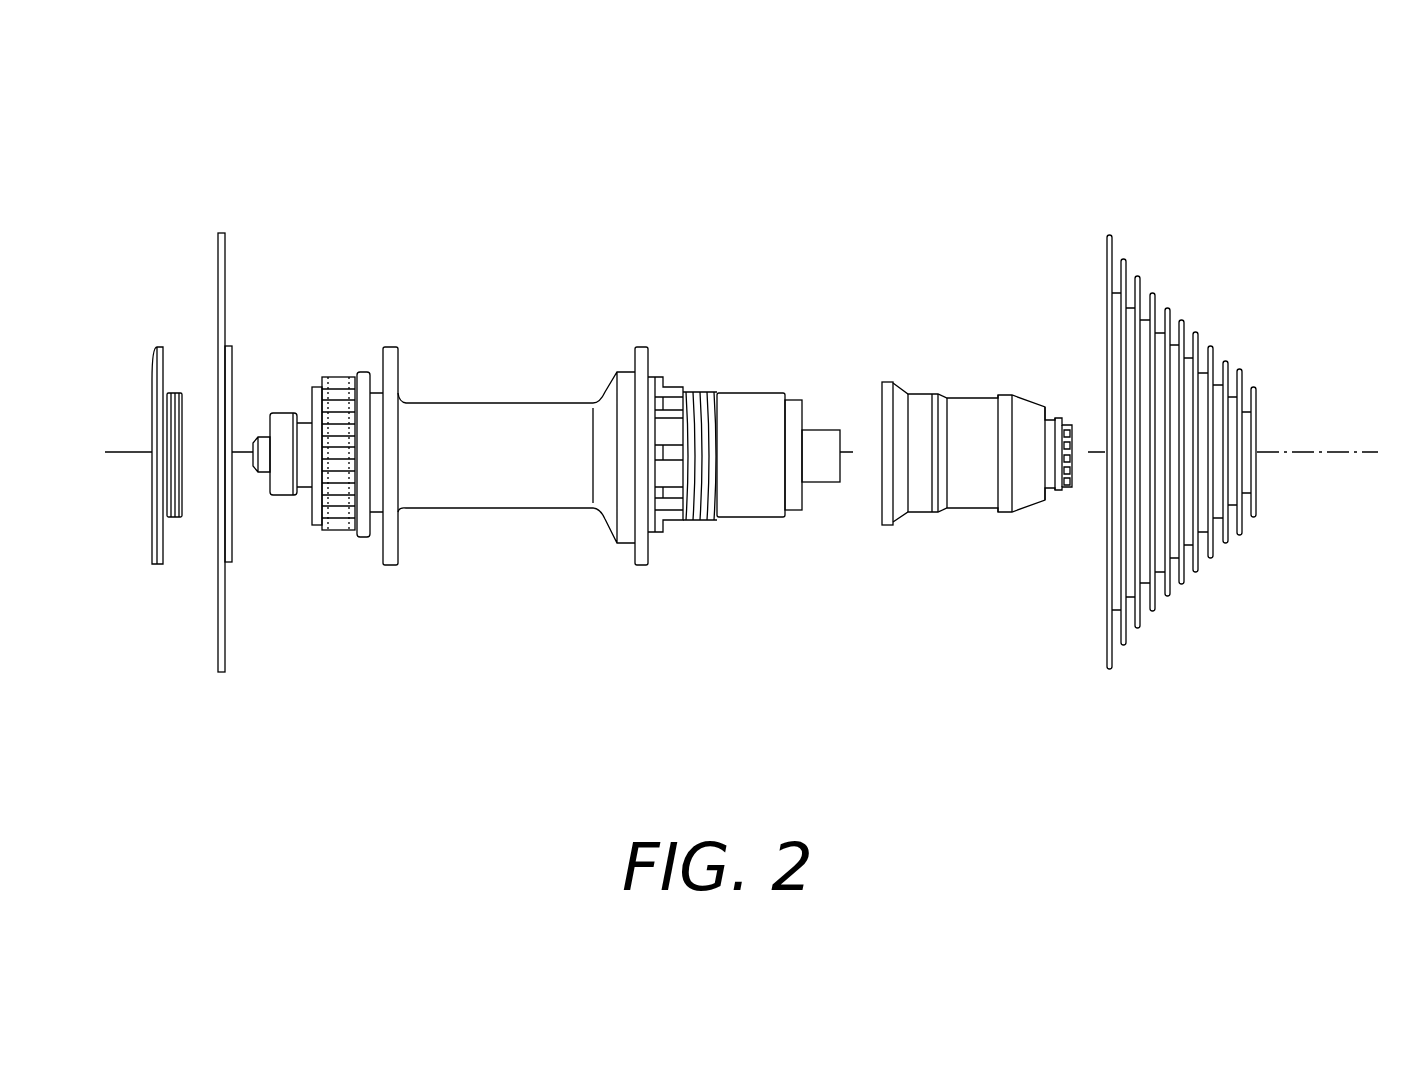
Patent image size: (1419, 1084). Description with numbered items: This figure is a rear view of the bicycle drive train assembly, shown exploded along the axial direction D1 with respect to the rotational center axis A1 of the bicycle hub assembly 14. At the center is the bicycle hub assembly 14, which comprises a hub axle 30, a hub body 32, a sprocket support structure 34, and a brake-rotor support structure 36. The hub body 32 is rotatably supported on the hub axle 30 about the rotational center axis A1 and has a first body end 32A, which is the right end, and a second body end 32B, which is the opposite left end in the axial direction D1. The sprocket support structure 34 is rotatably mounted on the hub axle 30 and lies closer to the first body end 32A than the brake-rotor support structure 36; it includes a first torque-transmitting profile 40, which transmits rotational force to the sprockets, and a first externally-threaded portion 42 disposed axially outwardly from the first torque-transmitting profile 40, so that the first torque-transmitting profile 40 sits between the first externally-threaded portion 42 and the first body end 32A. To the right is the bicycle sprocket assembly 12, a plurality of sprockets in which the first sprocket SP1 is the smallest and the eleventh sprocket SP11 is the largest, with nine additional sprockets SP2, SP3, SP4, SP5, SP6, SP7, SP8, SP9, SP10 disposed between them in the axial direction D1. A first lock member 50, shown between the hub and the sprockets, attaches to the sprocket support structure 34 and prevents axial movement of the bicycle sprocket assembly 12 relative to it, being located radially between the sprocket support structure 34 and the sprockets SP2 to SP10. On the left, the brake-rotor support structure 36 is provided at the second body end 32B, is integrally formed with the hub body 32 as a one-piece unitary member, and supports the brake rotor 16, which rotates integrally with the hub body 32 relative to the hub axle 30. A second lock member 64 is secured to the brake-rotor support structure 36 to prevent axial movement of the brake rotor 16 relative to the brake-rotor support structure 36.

The bicycle sprocket assembly 12 is at (1209, 388).
The bicycle hub assembly 14 is at (550, 420).
The brake rotor 16 is at (234, 278).
The hub axle 30 is at (821, 421).
The hub body 32 is at (509, 420).
The first body end 32A is at (641, 346).
The second body end 32B is at (393, 346).
The sprocket support structure 34 is at (739, 372).
The brake-rotor support structure 36 is at (333, 362).
The first torque-transmitting profile 40 is at (672, 383).
The first externally-threaded portion 42 is at (704, 386).
The first lock member 50 is at (983, 357).
The second lock member 64 is at (158, 339).
The first sprocket SP1 is at (1254, 377).
The second sprocket SP2 is at (1240, 368).
The third sprocket SP3 is at (1226, 359).
The fourth sprocket SP4 is at (1211, 356).
The fifth sprocket SP5 is at (1196, 330).
The sixth sprocket SP6 is at (1182, 320).
The seventh sprocket SP7 is at (1168, 307).
The eighth sprocket SP8 is at (1153, 292).
The ninth sprocket SP9 is at (1138, 272).
The tenth sprocket SP10 is at (1123, 256).
The eleventh sprocket SP11 is at (1108, 236).
The rotational center axis A1 is at (1370, 440).
The axial direction D1 is at (603, 164).